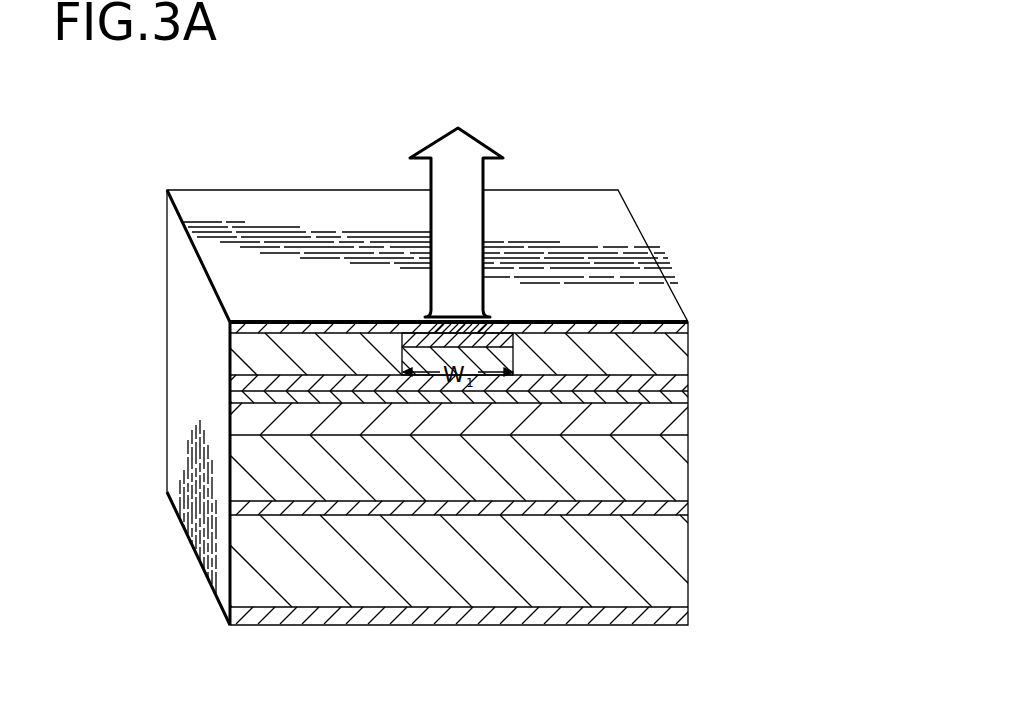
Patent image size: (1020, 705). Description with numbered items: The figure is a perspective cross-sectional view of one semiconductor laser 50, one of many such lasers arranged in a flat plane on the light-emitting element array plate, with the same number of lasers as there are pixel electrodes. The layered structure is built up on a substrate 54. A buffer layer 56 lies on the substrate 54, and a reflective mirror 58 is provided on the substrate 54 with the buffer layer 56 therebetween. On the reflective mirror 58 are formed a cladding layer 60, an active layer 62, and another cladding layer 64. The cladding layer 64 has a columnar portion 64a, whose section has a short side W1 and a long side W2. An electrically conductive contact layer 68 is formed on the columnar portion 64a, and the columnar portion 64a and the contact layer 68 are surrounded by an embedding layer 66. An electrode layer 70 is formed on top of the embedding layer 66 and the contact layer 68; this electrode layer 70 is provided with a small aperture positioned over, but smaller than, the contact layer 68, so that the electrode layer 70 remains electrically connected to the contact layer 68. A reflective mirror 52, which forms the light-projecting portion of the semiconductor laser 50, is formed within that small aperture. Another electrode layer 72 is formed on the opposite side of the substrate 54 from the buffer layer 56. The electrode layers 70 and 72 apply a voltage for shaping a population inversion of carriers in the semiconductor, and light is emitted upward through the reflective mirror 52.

The semiconductor laser 50 is at (301, 172).
The reflective mirror 52 is at (493, 318).
The substrate 54 is at (677, 558).
The buffer layer 56 is at (675, 506).
The reflective mirror 58 is at (672, 475).
The cladding layer 60 is at (678, 420).
The active layer 62 is at (678, 400).
The cladding layer 64 is at (675, 381).
The columnar portion 64a is at (416, 355).
The embedding layer 66 is at (525, 254).
The contact layer 68 is at (523, 317).
The electrode layer 70 is at (630, 312).
The electrode layer 72 is at (673, 620).